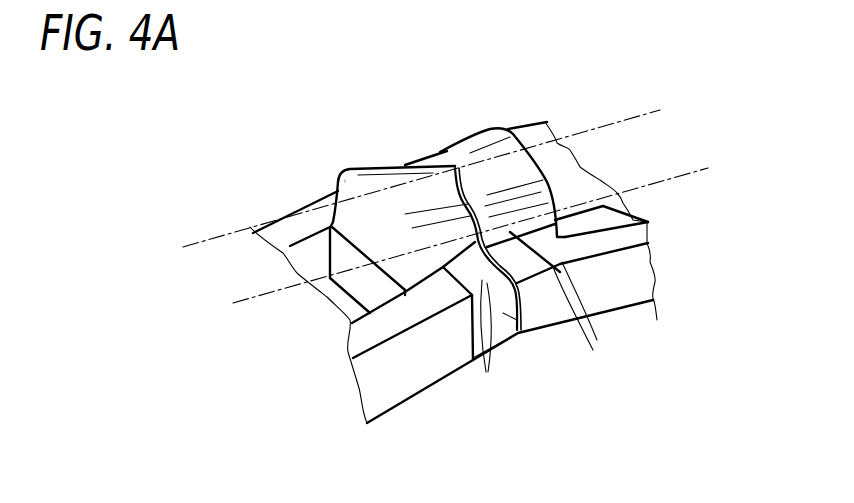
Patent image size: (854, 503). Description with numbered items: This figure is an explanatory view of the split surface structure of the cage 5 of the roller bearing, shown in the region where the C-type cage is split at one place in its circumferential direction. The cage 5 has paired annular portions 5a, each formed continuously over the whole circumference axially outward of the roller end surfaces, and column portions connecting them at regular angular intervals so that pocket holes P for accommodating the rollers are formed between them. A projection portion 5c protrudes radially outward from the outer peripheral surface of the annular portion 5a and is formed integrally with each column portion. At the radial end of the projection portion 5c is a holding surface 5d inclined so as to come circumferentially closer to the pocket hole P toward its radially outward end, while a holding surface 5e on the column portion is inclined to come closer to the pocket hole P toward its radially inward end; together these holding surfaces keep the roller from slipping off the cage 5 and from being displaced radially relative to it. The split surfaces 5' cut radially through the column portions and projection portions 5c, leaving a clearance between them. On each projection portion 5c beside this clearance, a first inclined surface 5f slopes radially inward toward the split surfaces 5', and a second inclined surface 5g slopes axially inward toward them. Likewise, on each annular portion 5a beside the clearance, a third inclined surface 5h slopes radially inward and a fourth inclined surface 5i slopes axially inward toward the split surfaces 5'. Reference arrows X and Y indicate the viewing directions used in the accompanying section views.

The cage 5 is at (453, 231).
The annular portion 5a is at (363, 338).
The projection portion 5c is at (340, 155).
The holding surface 5d is at (357, 187).
The holding surface 5e is at (363, 292).
The first inclined surface 5f is at (462, 190).
The second inclined surface 5g is at (593, 350).
The third inclined surface 5h is at (489, 372).
The fourth inclined surface 5i is at (532, 310).
The split surface 5' is at (504, 380).
The pocket hole P is at (305, 236).
The X axis direction X is at (183, 247).
The Y axis direction Y is at (210, 280).